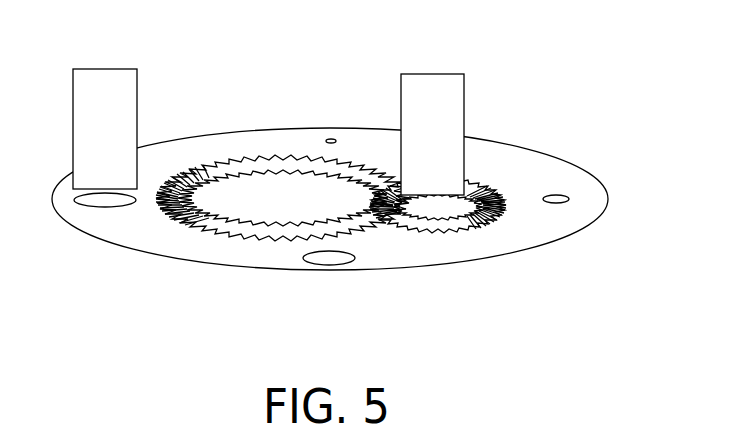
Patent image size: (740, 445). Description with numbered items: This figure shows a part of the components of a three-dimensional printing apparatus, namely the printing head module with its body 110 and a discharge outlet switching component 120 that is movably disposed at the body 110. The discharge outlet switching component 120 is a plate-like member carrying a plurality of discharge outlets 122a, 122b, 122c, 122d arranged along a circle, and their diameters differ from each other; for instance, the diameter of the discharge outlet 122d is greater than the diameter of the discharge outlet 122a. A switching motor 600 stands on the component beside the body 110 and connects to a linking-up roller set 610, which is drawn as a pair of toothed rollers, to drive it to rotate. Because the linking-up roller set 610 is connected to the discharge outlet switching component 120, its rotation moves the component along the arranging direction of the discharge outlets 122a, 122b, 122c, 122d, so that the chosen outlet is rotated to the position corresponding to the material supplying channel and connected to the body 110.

The body 110 is at (125, 105).
The discharge outlet switching component 120 is at (520, 145).
The discharge outlet 122a is at (331, 138).
The discharge outlet 122b is at (556, 203).
The discharge outlet 122c is at (329, 265).
The discharge outlet 122d is at (102, 207).
The switching motor 600 is at (446, 100).
The linking-up roller set 610 is at (267, 220).